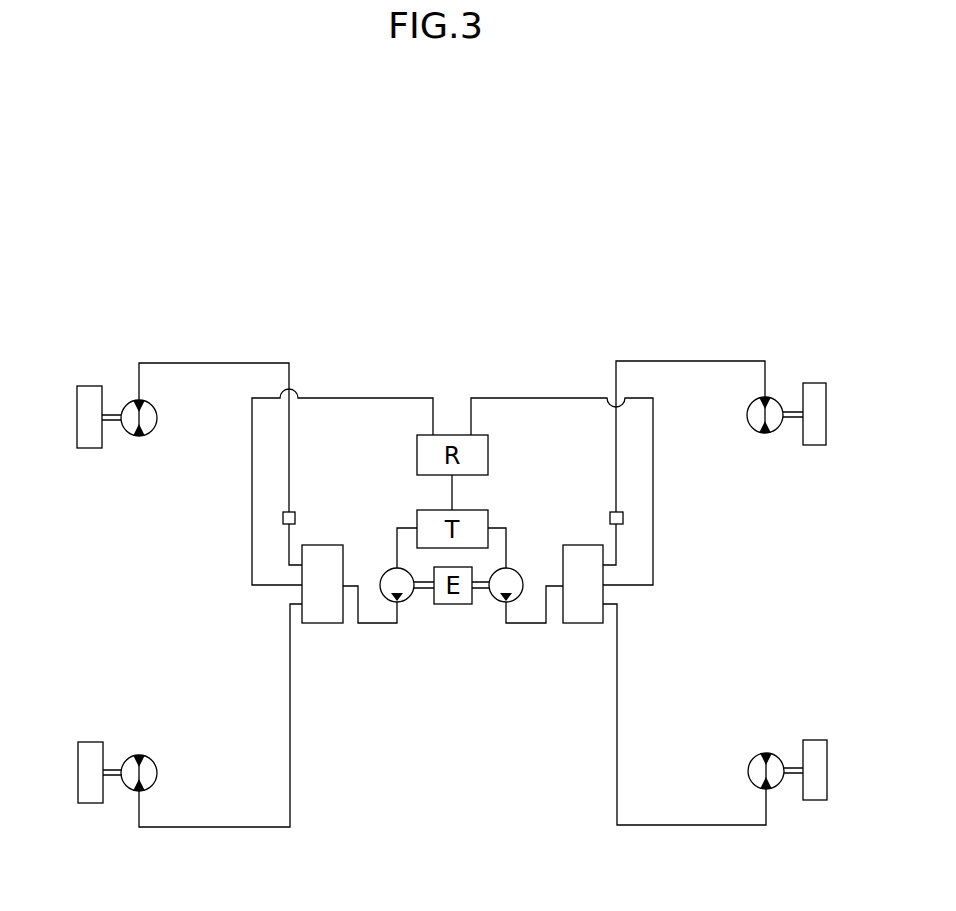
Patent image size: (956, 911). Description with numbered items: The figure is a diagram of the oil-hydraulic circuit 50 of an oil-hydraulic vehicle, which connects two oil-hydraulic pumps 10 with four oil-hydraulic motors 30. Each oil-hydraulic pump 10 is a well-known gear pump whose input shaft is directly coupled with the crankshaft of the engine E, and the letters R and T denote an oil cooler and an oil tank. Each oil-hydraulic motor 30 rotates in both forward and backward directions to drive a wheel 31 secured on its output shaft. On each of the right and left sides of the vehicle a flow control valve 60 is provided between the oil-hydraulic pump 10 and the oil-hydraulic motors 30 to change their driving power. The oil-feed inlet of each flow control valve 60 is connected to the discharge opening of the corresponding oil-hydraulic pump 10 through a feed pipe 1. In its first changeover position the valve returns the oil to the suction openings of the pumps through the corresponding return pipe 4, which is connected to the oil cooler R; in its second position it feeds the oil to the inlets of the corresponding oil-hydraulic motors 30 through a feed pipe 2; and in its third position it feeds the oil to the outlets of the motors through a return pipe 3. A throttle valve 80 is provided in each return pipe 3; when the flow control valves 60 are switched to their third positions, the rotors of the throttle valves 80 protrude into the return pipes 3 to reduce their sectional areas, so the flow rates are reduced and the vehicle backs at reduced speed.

The feed pipe 1 is at (377, 625).
The feed pipe 2 is at (230, 829).
The return pipe 3 is at (200, 362).
The return pipe 4 is at (377, 400).
The oil-hydraulic pump 10 is at (494, 600).
The oil-hydraulic motor 30 is at (790, 845).
The wheel 31 is at (93, 440).
The oil-hydraulic circuit 50 is at (567, 373).
The flow control valve 60 is at (580, 622).
The throttle valve 80 is at (295, 518).